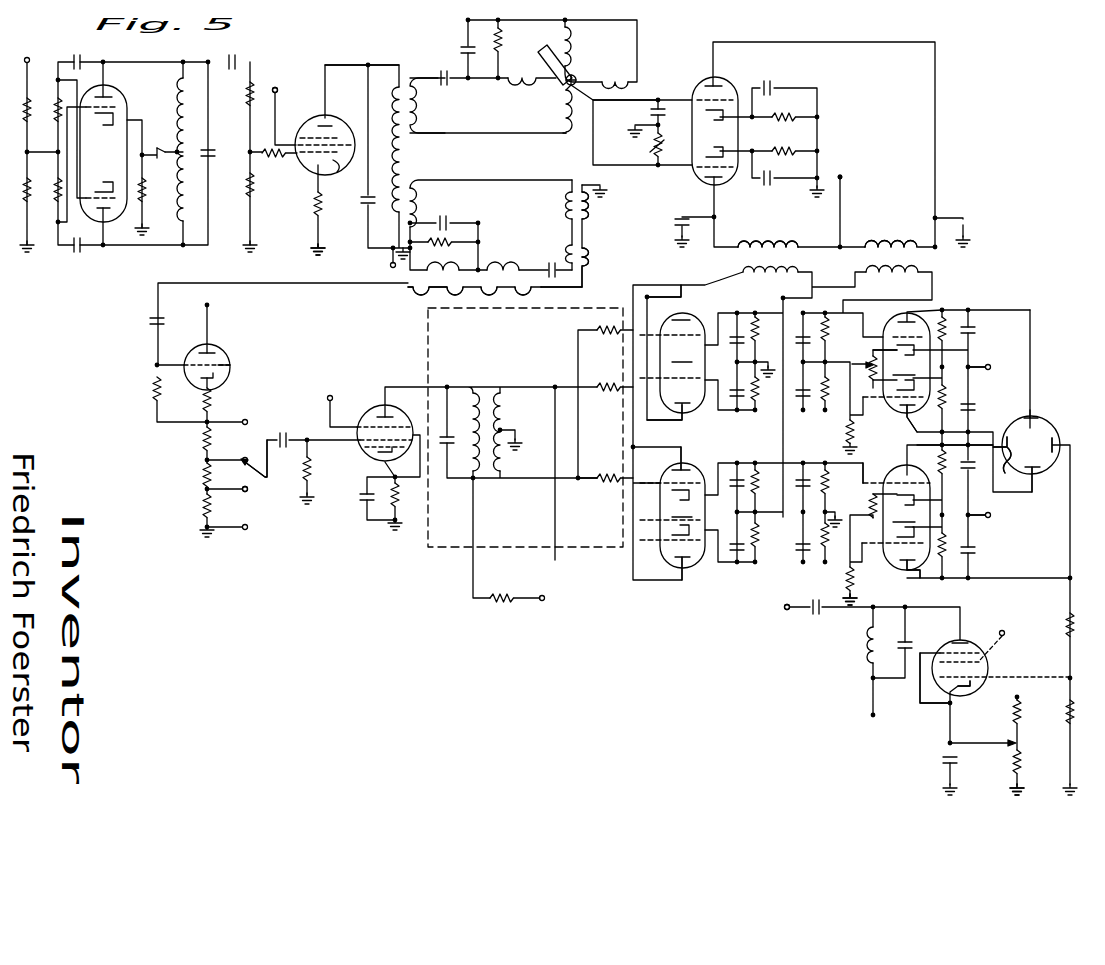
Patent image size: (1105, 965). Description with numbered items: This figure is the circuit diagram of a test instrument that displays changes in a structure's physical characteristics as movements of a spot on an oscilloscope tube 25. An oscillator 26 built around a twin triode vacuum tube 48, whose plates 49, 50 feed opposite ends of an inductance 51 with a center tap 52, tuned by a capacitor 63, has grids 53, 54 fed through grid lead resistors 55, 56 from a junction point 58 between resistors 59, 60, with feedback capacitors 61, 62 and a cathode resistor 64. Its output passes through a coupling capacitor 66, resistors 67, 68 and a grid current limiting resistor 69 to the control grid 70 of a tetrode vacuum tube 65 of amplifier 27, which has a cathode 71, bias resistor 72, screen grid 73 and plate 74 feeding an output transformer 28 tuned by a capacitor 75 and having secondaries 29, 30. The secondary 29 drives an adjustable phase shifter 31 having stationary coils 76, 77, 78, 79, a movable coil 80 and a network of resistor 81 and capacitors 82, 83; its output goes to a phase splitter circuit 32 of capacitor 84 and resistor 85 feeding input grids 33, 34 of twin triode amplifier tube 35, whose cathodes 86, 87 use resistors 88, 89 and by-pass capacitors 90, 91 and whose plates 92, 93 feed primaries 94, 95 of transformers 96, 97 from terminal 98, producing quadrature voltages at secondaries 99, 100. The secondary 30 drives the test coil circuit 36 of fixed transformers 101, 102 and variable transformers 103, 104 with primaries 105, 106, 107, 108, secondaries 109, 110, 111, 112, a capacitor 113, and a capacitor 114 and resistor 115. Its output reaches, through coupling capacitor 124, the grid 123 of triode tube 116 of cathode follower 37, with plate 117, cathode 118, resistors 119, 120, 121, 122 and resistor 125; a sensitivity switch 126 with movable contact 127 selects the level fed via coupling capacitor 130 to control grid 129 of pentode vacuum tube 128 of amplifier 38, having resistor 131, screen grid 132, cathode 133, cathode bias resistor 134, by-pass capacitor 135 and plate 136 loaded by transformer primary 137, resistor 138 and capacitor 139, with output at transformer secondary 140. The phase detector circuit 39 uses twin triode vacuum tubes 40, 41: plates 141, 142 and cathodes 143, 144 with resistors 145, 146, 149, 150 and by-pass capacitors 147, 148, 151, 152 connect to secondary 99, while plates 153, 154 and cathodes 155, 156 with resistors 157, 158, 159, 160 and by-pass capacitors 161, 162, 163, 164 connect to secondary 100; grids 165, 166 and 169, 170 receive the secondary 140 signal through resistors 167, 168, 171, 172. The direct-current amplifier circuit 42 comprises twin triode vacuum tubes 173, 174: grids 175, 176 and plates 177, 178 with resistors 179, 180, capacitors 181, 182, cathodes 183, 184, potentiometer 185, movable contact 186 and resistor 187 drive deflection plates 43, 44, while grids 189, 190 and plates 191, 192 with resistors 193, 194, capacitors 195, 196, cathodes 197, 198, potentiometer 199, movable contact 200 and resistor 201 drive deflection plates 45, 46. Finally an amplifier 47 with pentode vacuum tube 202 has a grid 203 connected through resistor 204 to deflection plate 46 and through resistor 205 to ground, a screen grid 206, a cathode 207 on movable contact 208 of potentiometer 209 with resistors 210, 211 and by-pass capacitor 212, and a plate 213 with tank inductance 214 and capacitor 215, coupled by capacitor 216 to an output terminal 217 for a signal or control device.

The oscilloscope tube 25 is at (1037, 424).
The oscillator 26 is at (101, 248).
The amplifier 27 is at (337, 55).
The output transformer 28 is at (404, 78).
The secondary 29 is at (418, 110).
The secondary 30 is at (420, 196).
The adjustable phase shifter 31 is at (615, 47).
The phase splitter circuit 32 is at (658, 95).
The input grid 33 is at (694, 100).
The input grid 34 is at (694, 169).
The twin triode amplifier tube 35 is at (730, 184).
The test coil circuit 36 is at (602, 238).
The cathode follower 37 is at (245, 350).
The amplifier 38 is at (382, 395).
The phase detector circuit 39 is at (680, 598).
The twin triode vacuum tube 40 is at (682, 363).
The twin triode vacuum tube 41 is at (682, 515).
The direct-current amplifier circuit 42 is at (968, 300).
The deflection plate 43 is at (1032, 417).
The deflection plate 44 is at (1034, 475).
The deflection plate 45 is at (1000, 465).
The deflection plate 46 is at (1056, 443).
The amplifier 47 is at (965, 630).
The twin triode vacuum tube 48 is at (116, 223).
The plate 49 is at (108, 94).
The plate 50 is at (96, 218).
The inductance 51 is at (176, 122).
The center tap 52 is at (160, 155).
The grid 53 is at (120, 109).
The grid 54 is at (88, 190).
The grid lead resistor 55 is at (54, 185).
The grid lead resistor 56 is at (54, 108).
The junction point 58 is at (24, 152).
The resistor 59 is at (24, 192).
The resistor 60 is at (24, 104).
The capacitor 61 is at (86, 60).
The capacitor 62 is at (70, 248).
The capacitor 63 is at (215, 156).
The resistor 64 is at (146, 200).
The tetrode vacuum tube 65 is at (342, 166).
The coupling capacitor 66 is at (240, 60).
The resistor 67 is at (246, 95).
The resistor 68 is at (245, 191).
The grid current limiting resistor 69 is at (274, 156).
The control grid 70 is at (307, 167).
The cathode 71 is at (320, 200).
The bias resistor 72 is at (310, 202).
The screen grid 73 is at (304, 138).
The plate 74 is at (328, 124).
The capacitor 75 is at (362, 205).
The stationary coil 76 is at (576, 43).
The stationary coil 77 is at (616, 80).
The stationary coil 78 is at (563, 128).
The stationary coil 79 is at (555, 100).
The movable coil 80 is at (500, 45).
The resistor 81 is at (512, 81).
The capacitor 82 is at (466, 42).
The capacitor 83 is at (440, 76).
The capacitor 84 is at (652, 116).
The resistor 85 is at (648, 152).
The cathode 86 is at (722, 118).
The cathode 87 is at (723, 152).
The resistor 88 is at (782, 118).
The resistor 89 is at (782, 153).
The by-pass capacitor 90 is at (772, 86).
The by-pass capacitor 91 is at (770, 180).
The plate 92 is at (720, 84).
The plate 93 is at (710, 178).
The primary 94 is at (895, 241).
The primary 95 is at (781, 246).
The transformer 96 is at (930, 259).
The transformer 97 is at (800, 258).
The terminal 98 is at (840, 177).
The secondary 99 is at (890, 280).
The secondary 100 is at (738, 271).
The fixed transformer 101 is at (583, 186).
The fixed transformer 102 is at (579, 285).
The variable transformer 103 is at (555, 288).
The variable transformer 104 is at (405, 273).
The primary 105 is at (568, 203).
The primary 106 is at (565, 245).
The primary 107 is at (502, 262).
The primary 108 is at (448, 265).
The secondary 109 is at (588, 208).
The secondary 110 is at (588, 256).
The secondary 111 is at (500, 293).
The secondary 112 is at (433, 294).
The capacitor 113 is at (548, 258).
The capacitor 114 is at (450, 220).
The resistor 115 is at (464, 240).
The triode tube 116 is at (232, 364).
The plate 117 is at (210, 350).
The cathode 118 is at (197, 383).
The resistor 119 is at (212, 400).
The resistor 120 is at (212, 439).
The resistor 121 is at (203, 475).
The resistor 122 is at (203, 507).
The grid 123 is at (193, 355).
The coupling capacitor 124 is at (158, 318).
The resistor 125 is at (153, 390).
The sensitivity switch 126 is at (256, 483).
The movable contact 127 is at (250, 463).
The pentode vacuum tube 128 is at (380, 415).
The control grid 129 is at (360, 442).
The coupling capacitor 130 is at (287, 435).
The resistor 131 is at (313, 472).
The screen grid 132 is at (365, 426).
The cathode 133 is at (375, 453).
The cathode bias resistor 134 is at (398, 500).
The by-pass capacitor 135 is at (365, 500).
The plate 136 is at (402, 419).
The transformer primary 137 is at (473, 393).
The resistor 138 is at (487, 600).
The capacitor 139 is at (447, 448).
The transformer secondary 140 is at (502, 422).
The plate 141 is at (680, 297).
The plate 142 is at (683, 413).
The cathode 143 is at (685, 320).
The cathode 144 is at (662, 417).
The resistor 145 is at (827, 330).
The resistor 146 is at (827, 400).
The by-pass capacitor 147 is at (805, 335).
The by-pass capacitor 148 is at (802, 405).
The resistor 149 is at (758, 325).
The resistor 150 is at (754, 400).
The by-pass capacitor 151 is at (737, 335).
The by-pass capacitor 152 is at (734, 400).
The plate 153 is at (675, 478).
The plate 154 is at (680, 558).
The cathode 155 is at (685, 473).
The cathode 156 is at (670, 538).
The resistor 157 is at (756, 478).
The resistor 158 is at (755, 548).
The resistor 159 is at (825, 470).
The resistor 160 is at (825, 550).
The by-pass capacitor 161 is at (736, 475).
The by-pass capacitor 162 is at (735, 555).
The by-pass capacitor 163 is at (803, 482).
The by-pass capacitor 164 is at (803, 555).
The grid 165 is at (640, 338).
The grid 166 is at (670, 492).
The resistor 167 is at (598, 330).
The resistor 168 is at (605, 476).
The grid 169 is at (640, 377).
The grid 170 is at (667, 520).
The resistor 171 is at (603, 390).
The resistor 172 is at (585, 525).
The twin triode vacuum tube 173 is at (906, 363).
The twin triode vacuum tube 174 is at (906, 517).
The grid 175 is at (899, 335).
The grid 176 is at (867, 402).
The plate 177 is at (937, 310).
The plate 178 is at (912, 445).
The resistor 179 is at (968, 330).
The resistor 180 is at (968, 398).
The capacitor 181 is at (975, 320).
The capacitor 182 is at (970, 407).
The cathode 183 is at (964, 352).
The cathode 184 is at (942, 380).
The potentiometer 185 is at (873, 350).
The movable contact 186 is at (865, 364).
The resistor 187 is at (908, 433).
The grid 189 is at (860, 480).
The grid 190 is at (854, 575).
The plate 191 is at (863, 462).
The plate 192 is at (920, 578).
The resistor 193 is at (942, 467).
The resistor 194 is at (971, 560).
The capacitor 195 is at (968, 472).
The capacitor 196 is at (975, 548).
The cathode 197 is at (940, 502).
The cathode 198 is at (942, 530).
The potentiometer 199 is at (862, 503).
The movable contact 200 is at (868, 512).
The resistor 201 is at (856, 600).
The pentode vacuum tube 202 is at (960, 690).
The grid 203 is at (988, 663).
The resistor 204 is at (1067, 612).
The resistor 205 is at (1068, 717).
The screen grid 206 is at (1005, 640).
The cathode 207 is at (973, 686).
The movable contact 208 is at (1008, 746).
The potentiometer 209 is at (1020, 751).
The resistor 210 is at (1022, 765).
The resistor 211 is at (1020, 710).
The by-pass capacitor 212 is at (943, 760).
The plate 213 is at (960, 642).
The inductance 214 is at (863, 649).
The capacitor 215 is at (905, 662).
The capacitor 216 is at (822, 610).
The output terminal 217 is at (786, 611).